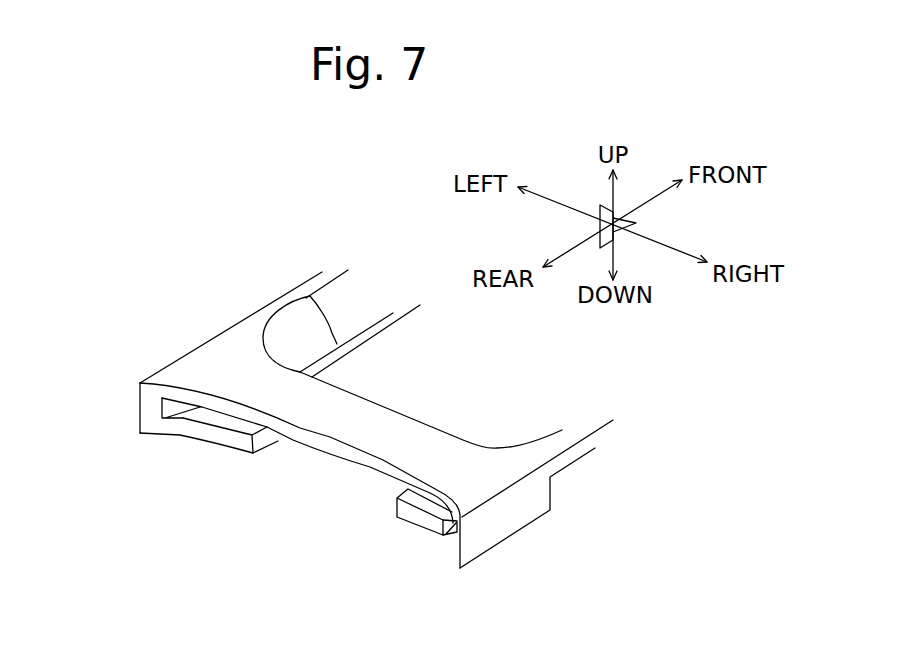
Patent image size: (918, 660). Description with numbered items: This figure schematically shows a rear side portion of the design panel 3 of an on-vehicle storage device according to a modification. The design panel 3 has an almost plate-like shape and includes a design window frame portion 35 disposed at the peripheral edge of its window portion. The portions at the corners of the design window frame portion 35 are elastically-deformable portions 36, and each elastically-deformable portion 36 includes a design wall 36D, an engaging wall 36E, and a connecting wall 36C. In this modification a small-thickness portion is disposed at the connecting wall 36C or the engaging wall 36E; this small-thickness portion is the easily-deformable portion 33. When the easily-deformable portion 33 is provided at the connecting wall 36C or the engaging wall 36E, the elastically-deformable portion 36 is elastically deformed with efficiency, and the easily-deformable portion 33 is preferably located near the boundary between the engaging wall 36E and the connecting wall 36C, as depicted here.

The design panel 3 is at (310, 262).
The easily-deformable portion 33 is at (168, 425).
The design window frame portion 35 is at (355, 425).
The elastically-deformable portion 36 is at (183, 375).
The connecting wall 36C is at (147, 403).
The design wall 36D is at (210, 356).
The engaging wall 36E is at (224, 436).